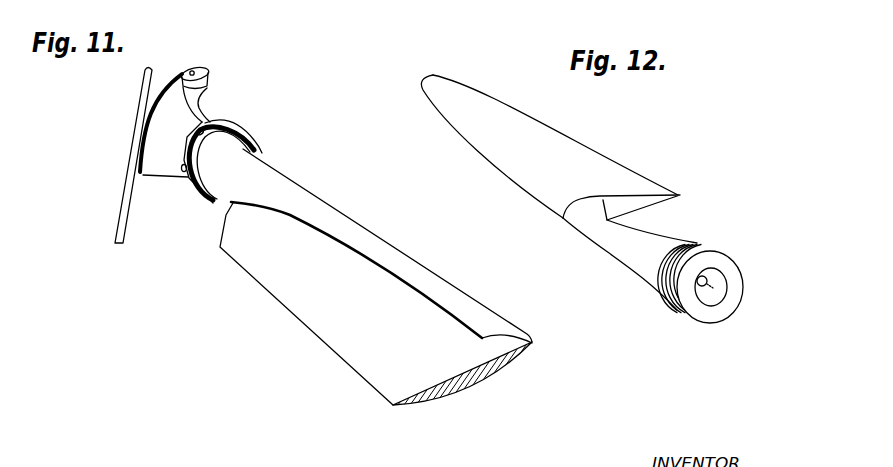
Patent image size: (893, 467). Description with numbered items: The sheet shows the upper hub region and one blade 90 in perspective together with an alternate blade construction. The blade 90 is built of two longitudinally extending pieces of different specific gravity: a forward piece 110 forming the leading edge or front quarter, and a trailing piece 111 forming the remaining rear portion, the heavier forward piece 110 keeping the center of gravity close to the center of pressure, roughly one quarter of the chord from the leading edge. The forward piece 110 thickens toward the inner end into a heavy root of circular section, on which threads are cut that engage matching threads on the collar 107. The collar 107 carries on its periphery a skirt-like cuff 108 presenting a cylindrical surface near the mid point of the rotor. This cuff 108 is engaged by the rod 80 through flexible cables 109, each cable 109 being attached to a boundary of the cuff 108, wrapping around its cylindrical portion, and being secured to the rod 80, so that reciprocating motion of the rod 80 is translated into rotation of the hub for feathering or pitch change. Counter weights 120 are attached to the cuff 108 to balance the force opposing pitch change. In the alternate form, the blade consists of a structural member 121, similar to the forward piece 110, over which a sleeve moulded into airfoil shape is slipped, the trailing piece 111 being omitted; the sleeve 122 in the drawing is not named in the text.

In FIG. 11, the rod 80 is at (127, 187).
In FIG. 11, the flexible cable 109 is at (177, 66).
In FIG. 11, the cuff 108 is at (202, 103).
In FIG. 11, the counter weight 120 is at (205, 72).
In FIG. 11, the collar 107 is at (245, 126).
In FIG. 11, the blade 90 is at (279, 163).
In FIG. 11, the forward piece 110 is at (322, 192).
In FIG. 11, the trailing piece 111 is at (257, 278).
In FIG. 12, the propeller blade 122 is at (598, 152).
In FIG. 12, the structural member 121 is at (657, 230).